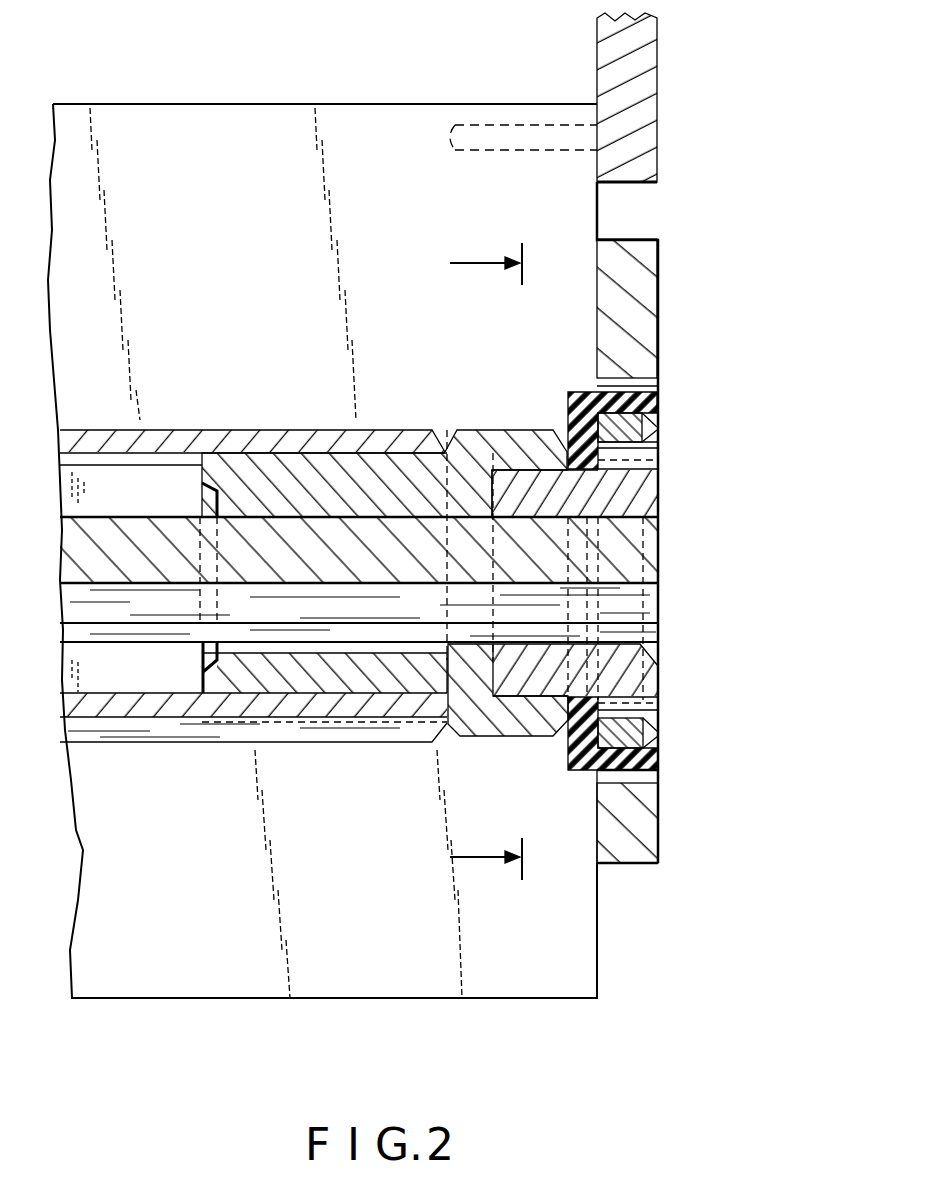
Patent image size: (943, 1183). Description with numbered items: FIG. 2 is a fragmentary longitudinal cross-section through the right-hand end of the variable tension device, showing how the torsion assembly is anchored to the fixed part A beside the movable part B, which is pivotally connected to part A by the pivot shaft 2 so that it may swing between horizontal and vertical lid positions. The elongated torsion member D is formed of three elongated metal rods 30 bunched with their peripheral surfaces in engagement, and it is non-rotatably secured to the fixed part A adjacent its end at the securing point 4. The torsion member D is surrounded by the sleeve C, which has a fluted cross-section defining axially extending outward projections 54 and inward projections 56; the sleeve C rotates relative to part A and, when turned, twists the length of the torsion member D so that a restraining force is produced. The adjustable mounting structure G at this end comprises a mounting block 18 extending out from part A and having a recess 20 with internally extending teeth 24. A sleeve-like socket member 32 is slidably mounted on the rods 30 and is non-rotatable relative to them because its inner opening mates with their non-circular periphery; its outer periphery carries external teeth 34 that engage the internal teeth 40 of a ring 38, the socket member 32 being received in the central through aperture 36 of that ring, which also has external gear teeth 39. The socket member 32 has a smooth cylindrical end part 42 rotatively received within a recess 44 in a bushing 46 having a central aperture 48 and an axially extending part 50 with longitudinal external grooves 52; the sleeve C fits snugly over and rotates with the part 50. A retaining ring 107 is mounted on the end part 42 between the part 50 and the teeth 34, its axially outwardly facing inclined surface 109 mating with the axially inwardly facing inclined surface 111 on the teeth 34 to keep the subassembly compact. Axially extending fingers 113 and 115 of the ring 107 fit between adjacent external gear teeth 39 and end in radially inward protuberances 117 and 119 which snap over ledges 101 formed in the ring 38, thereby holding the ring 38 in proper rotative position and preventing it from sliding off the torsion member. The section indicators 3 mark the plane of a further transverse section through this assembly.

The pivot shaft 2 is at (497, 140).
The securing point 4 is at (470, 545).
The mounting block 18 is at (657, 306).
The recess 20 is at (618, 383).
The internally extending teeth 24 is at (600, 779).
The elongated metal rods 30 is at (180, 535).
The socket member 32 is at (658, 478).
The external teeth 34 is at (658, 456).
The central through aperture 36 is at (631, 748).
The ring 38 is at (658, 722).
The external gear teeth 39 is at (582, 392).
The internal teeth 40 is at (658, 432).
The cylindrical end part 42 is at (531, 470).
The recess 44 is at (519, 692).
The bushing 46 is at (395, 488).
The central aperture 48 is at (237, 525).
The axially extending part 50 is at (283, 482).
The external grooves 52 is at (326, 693).
The outward projections 54 is at (184, 744).
The inward projections 56 is at (127, 693).
The ledges 101 is at (658, 390).
The retaining ring 107 is at (566, 430).
The axially outwardly facing inclined surface 109 is at (571, 745).
The axially inwardly facing inclined surface 111 is at (577, 773).
The axially extending finger 113 is at (607, 392).
The axially extending finger 115 is at (658, 803).
The radially inwardly extending protuberance 117 is at (658, 412).
The radially inwardly extending protuberance 119 is at (658, 737).
The fixed part A is at (296, 103).
The movable part B is at (592, 71).
The sleeve C is at (176, 434).
The torsion member D is at (101, 499).
The adjustable mounting structure G is at (668, 370).
The section line 3 is at (471, 561).